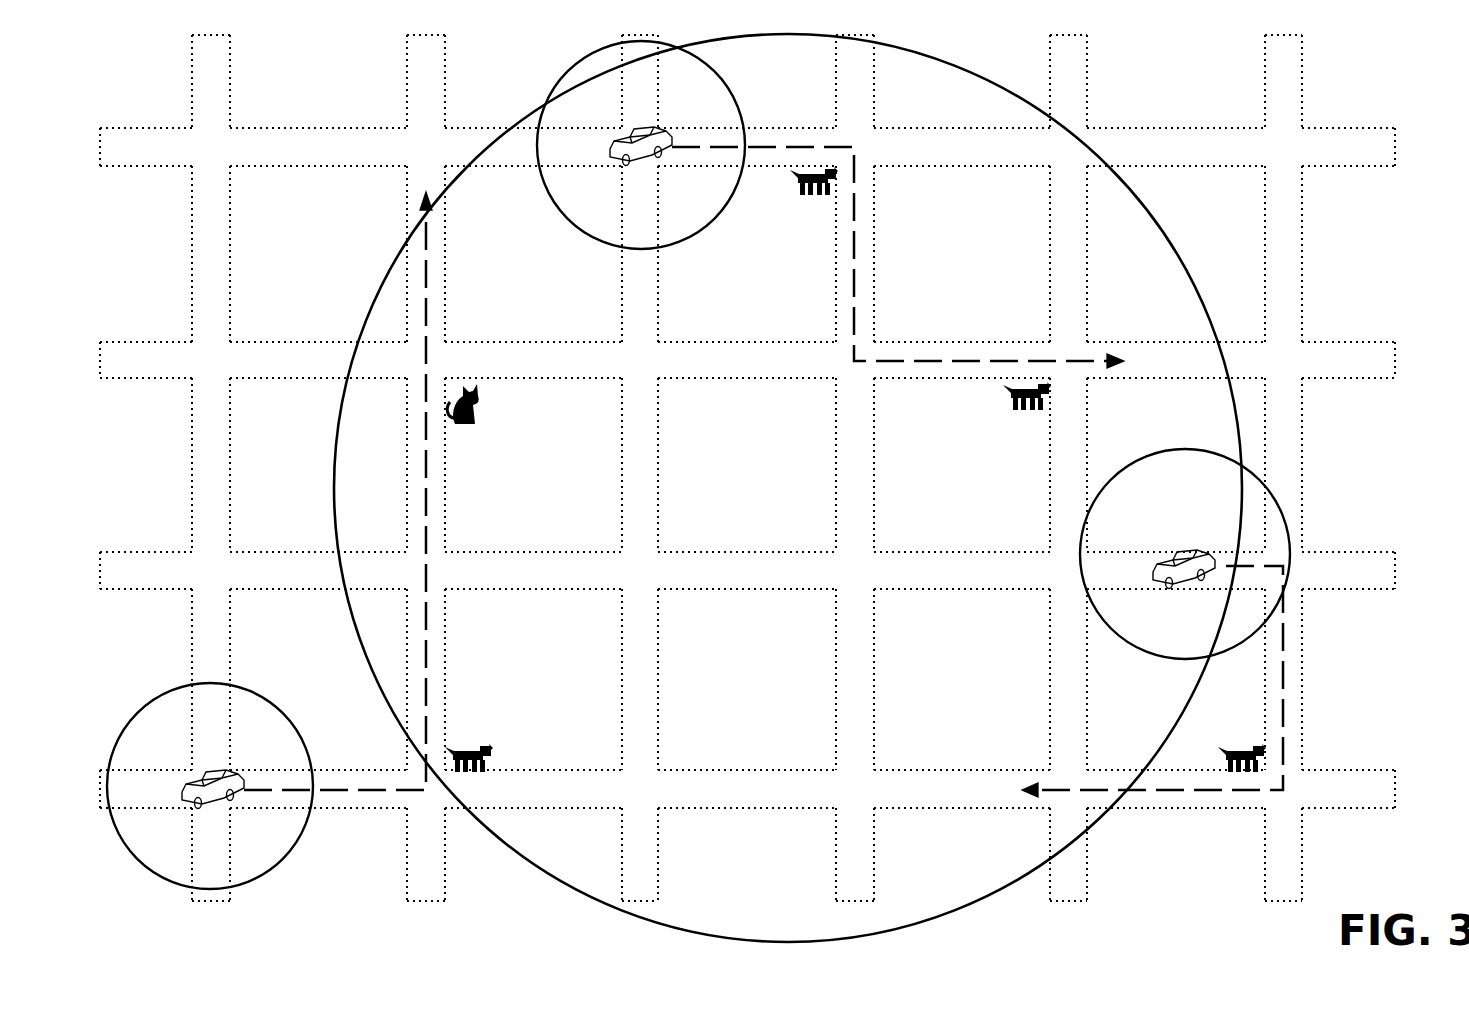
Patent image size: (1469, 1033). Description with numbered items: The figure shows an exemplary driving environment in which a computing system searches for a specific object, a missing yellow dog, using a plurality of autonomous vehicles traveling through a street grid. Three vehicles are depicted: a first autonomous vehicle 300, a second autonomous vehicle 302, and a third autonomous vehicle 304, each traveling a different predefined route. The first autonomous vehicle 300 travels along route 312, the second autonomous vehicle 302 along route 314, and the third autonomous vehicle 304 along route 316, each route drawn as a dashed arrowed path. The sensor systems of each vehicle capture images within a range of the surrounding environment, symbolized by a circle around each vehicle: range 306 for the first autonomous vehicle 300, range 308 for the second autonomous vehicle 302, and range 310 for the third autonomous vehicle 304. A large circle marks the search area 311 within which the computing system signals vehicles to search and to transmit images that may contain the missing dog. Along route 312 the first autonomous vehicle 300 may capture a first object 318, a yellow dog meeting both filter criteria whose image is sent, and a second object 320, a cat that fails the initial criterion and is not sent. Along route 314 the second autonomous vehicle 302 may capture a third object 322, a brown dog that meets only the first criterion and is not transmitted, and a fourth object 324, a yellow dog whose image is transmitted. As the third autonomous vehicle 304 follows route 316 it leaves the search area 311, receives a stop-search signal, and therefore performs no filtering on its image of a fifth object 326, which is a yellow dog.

The first autonomous vehicle 300 is at (215, 752).
The second autonomous vehicle 302 is at (645, 112).
The third autonomous vehicle 304 is at (1183, 528).
The range 306 is at (178, 690).
The range 308 is at (567, 73).
The range 310 is at (1123, 470).
The search area 311 is at (381, 290).
The route 312 is at (425, 526).
The route 314 is at (900, 360).
The route 316 is at (1188, 798).
The first object 318 is at (478, 731).
The second object 320 is at (496, 396).
The third object 322 is at (814, 208).
The fourth object 324 is at (1028, 420).
The fifth object 326 is at (1238, 732).